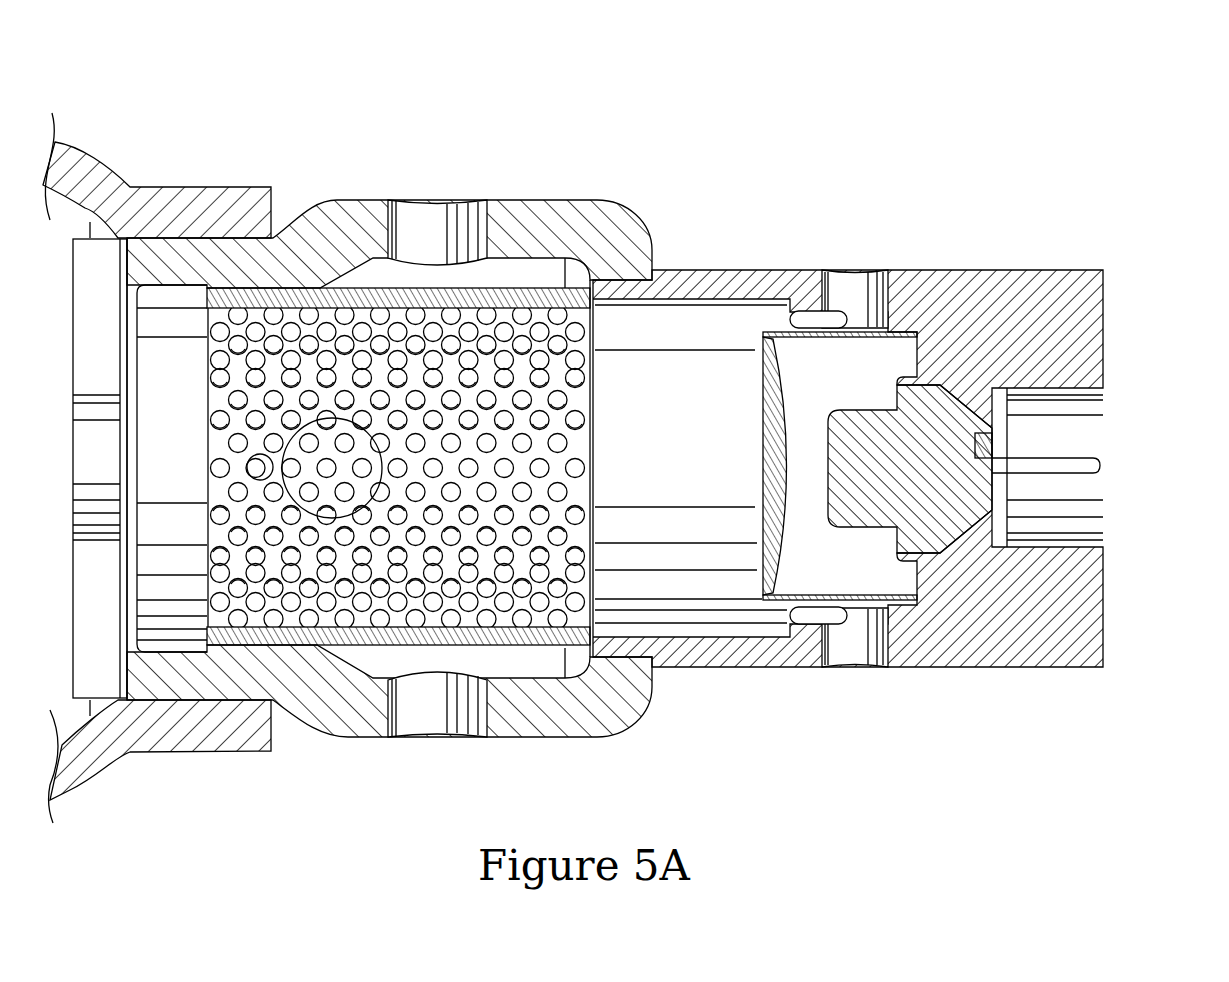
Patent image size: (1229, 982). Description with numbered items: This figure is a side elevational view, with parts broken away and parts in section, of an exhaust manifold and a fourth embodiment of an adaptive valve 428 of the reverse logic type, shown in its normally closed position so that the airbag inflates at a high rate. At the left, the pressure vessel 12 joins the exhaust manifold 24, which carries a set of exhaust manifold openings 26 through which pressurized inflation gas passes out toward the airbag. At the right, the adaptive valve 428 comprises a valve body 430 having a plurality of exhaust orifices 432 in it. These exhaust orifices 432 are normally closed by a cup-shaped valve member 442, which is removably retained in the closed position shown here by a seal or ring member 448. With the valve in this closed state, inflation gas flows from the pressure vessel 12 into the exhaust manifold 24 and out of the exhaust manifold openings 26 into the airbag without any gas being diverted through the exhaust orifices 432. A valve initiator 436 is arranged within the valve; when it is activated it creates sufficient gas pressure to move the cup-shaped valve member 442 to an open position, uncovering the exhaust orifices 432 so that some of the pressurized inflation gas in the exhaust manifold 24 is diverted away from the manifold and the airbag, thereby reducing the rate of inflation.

The pressure vessel 12 is at (186, 200).
The exhaust manifold 24 is at (568, 222).
The exhaust manifold openings 26 is at (418, 220).
The adaptive valve 428 is at (1062, 264).
The valve body 430 is at (1071, 337).
The exhaust orifices 432 is at (852, 284).
The valve initiator 436 is at (953, 545).
The cup-shaped valve member 442 is at (899, 330).
The seal or ring member 448 is at (806, 318).